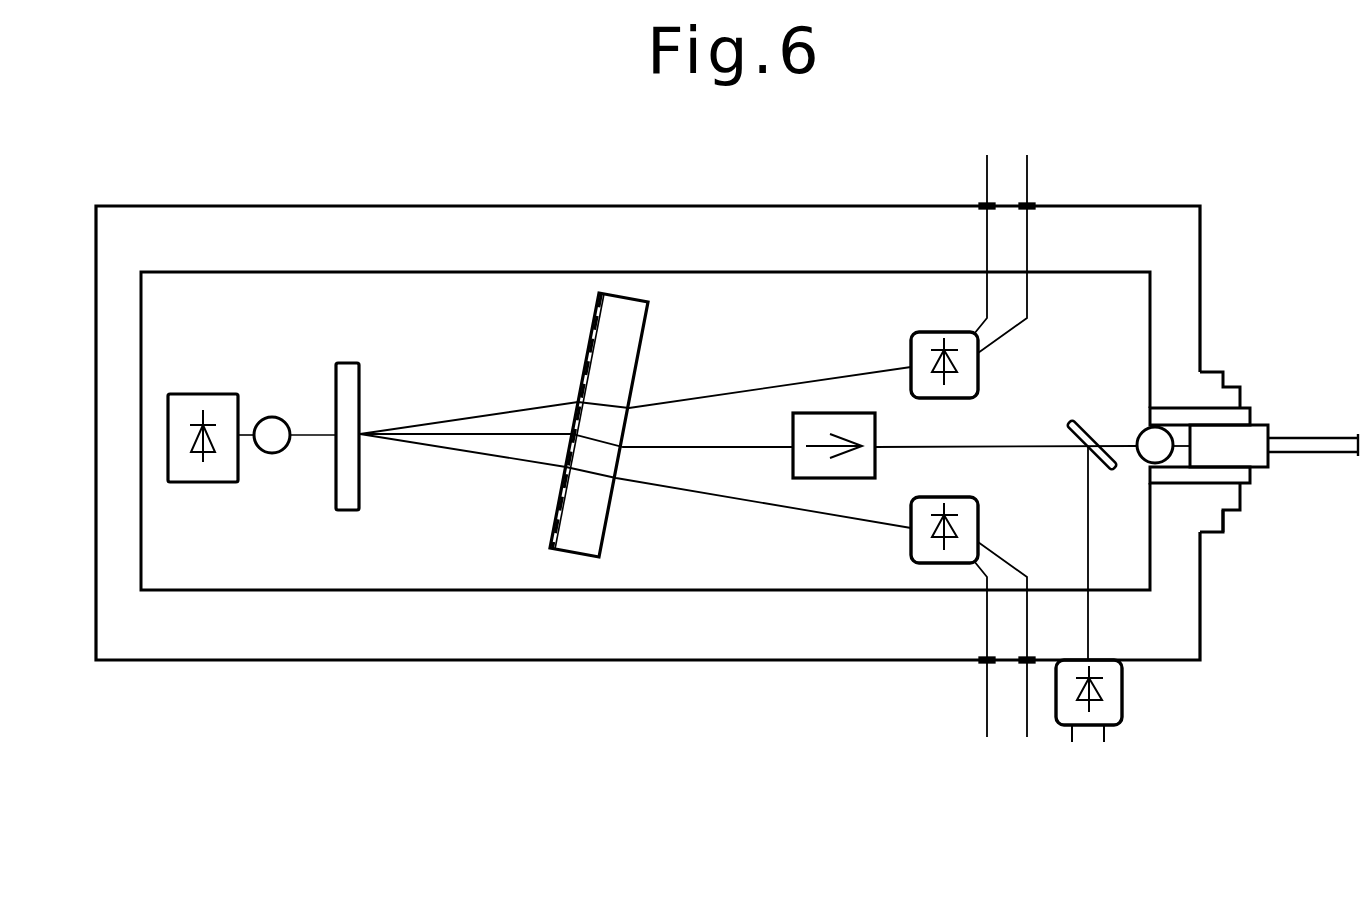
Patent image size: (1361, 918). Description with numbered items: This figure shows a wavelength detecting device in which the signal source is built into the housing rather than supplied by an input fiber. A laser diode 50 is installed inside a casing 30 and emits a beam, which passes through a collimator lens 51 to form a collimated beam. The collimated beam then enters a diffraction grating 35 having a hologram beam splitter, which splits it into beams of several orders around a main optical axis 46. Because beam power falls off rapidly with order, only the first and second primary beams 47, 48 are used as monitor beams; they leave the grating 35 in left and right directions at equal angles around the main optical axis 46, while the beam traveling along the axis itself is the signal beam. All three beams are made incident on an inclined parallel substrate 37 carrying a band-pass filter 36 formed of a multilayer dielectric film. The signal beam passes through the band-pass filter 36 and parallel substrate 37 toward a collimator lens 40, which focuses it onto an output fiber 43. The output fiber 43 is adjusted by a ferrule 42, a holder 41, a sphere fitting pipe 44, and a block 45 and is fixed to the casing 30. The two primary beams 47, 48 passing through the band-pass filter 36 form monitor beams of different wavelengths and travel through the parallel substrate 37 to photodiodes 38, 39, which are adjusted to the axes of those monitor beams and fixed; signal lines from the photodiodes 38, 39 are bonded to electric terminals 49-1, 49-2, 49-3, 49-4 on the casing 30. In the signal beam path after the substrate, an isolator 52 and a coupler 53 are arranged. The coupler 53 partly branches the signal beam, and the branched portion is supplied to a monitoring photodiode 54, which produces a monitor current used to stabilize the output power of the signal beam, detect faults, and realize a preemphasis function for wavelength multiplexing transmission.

The casing 30 is at (676, 206).
The diffraction grating 35 is at (348, 363).
The band-pass filter 36 is at (594, 318).
The parallel substrate 37 is at (645, 320).
The photodiode 38 is at (912, 332).
The photodiode 39 is at (908, 530).
The collimator lens 40 is at (1140, 432).
The holder 41 is at (1148, 483).
The ferrule 42 is at (1262, 425).
The output fiber 43 is at (1330, 453).
The sphere fitting pipe 44 is at (1240, 503).
The block 45 is at (1217, 533).
The main optical axis 46 is at (510, 436).
The first primary beam 47 is at (437, 447).
The second primary beam 48 is at (471, 418).
The electric terminal 49-1 is at (984, 204).
The electric terminal 49-2 is at (1031, 204).
The electric terminal 49-3 is at (984, 663).
The electric terminal 49-4 is at (1026, 670).
The laser diode 50 is at (222, 394).
The collimator lens 51 is at (282, 418).
The isolator 52 is at (876, 427).
The coupler 53 is at (1068, 430).
The monitoring photodiode 54 is at (1122, 692).